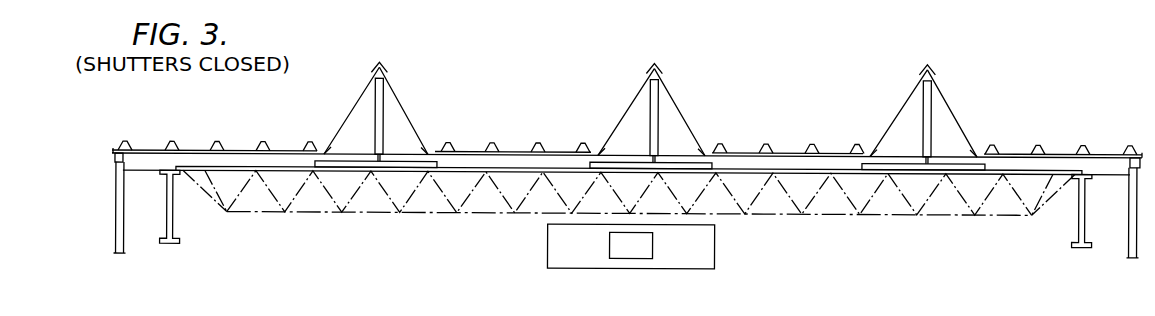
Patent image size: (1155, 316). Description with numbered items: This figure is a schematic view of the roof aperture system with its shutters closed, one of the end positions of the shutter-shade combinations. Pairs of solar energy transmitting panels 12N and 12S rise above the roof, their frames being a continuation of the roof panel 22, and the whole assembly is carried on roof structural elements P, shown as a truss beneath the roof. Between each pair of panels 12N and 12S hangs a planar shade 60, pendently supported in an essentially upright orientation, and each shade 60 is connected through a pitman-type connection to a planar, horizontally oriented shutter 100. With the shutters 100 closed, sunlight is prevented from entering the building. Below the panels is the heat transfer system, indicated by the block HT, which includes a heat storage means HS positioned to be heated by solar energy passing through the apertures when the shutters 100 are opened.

The roof panel 22 is at (236, 150).
The panel 12N is at (353, 106).
The panel 12S is at (404, 107).
The shade 60 is at (384, 100).
The shutter 100 is at (419, 160).
The roof structural elements P is at (357, 213).
The heat transfer system HT is at (553, 248).
The heat storage means HS is at (632, 248).